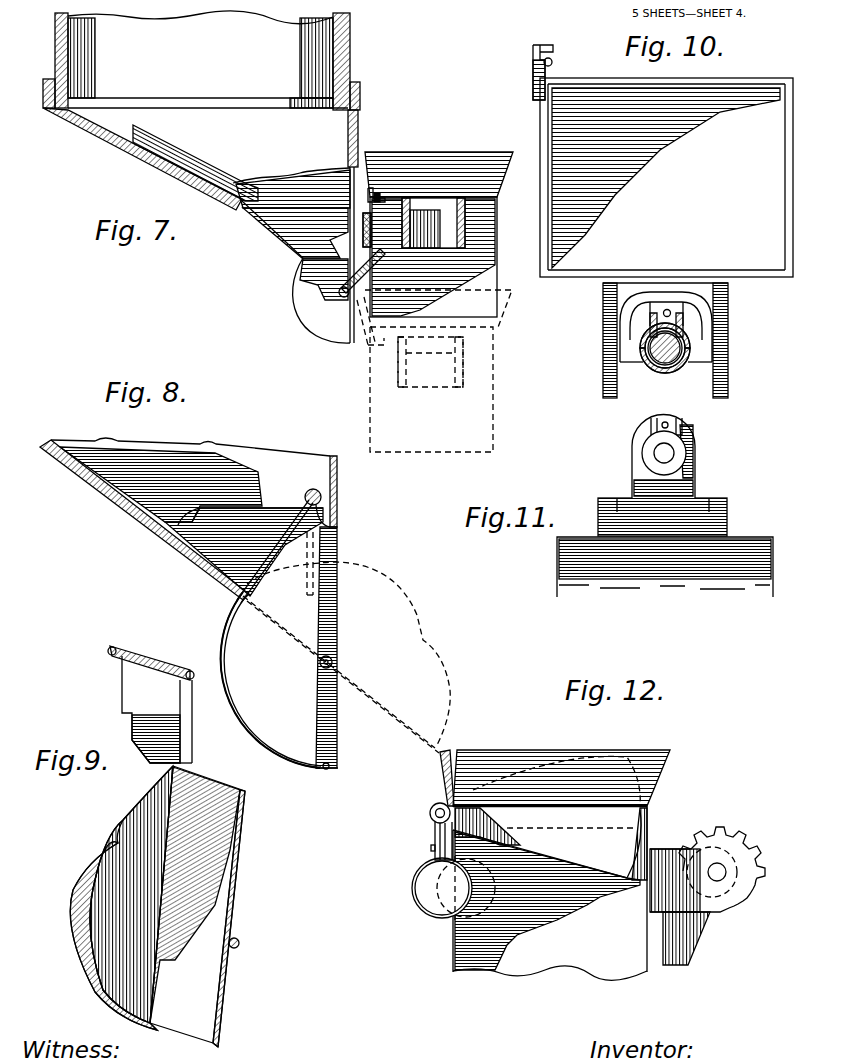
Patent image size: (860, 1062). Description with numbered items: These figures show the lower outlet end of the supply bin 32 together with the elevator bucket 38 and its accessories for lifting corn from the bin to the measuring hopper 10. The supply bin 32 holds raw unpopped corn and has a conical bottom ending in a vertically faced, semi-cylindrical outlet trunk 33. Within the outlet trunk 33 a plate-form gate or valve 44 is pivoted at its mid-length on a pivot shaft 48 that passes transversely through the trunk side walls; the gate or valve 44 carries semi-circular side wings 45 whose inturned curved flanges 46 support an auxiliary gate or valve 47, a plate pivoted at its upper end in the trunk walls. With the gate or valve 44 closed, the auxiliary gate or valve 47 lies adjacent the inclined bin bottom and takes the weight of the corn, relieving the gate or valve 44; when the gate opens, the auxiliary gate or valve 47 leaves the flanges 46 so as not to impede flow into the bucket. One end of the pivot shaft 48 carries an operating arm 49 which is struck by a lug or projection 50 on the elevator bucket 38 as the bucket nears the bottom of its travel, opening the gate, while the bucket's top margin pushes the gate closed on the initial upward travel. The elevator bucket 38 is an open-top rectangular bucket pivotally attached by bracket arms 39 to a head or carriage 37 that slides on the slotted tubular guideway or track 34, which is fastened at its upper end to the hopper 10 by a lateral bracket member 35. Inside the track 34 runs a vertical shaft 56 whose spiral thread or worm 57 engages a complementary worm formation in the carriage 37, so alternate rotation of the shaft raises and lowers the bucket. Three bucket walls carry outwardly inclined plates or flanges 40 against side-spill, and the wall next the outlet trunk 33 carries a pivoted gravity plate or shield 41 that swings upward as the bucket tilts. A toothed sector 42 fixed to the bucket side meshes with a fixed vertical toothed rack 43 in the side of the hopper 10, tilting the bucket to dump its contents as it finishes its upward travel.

In FIG. 11, the casing or hopper 10 is at (665, 572).
In FIG. 7, the supply bin 32 is at (201, 177).
In FIG. 11, the supply bin 32 is at (691, 450).
In FIG. 7, the outlet trunk 33 is at (296, 292).
In FIG. 8, the outlet trunk 33 is at (284, 754).
In FIG. 10, the guideway or track 34 is at (650, 367).
In FIG. 11, the lateral bracket member 35 is at (691, 473).
In FIG. 12, the head or carriage 37 is at (693, 936).
In FIG. 7, the elevator bucket 38 is at (490, 270).
In FIG. 10, the elevator bucket 38 is at (663, 161).
In FIG. 8, the elevator bucket 38 is at (185, 519).
In FIG. 12, the elevator bucket 38 is at (529, 891).
In FIG. 10, the bracket arms 39 is at (706, 319).
In FIG. 7, the inclined plates or flanges 40 is at (448, 163).
In FIG. 12, the inclined plates or flanges 40 is at (569, 757).
In FIG. 7, the gravity plate or shield 41 is at (367, 196).
In FIG. 12, the gravity plate or shield 41 is at (547, 843).
In FIG. 7, the toothed sector 42 is at (458, 228).
In FIG. 10, the toothed sector 42 is at (604, 360).
In FIG. 12, the toothed sector 42 is at (747, 830).
In FIG. 11, the toothed rack 43 is at (600, 498).
In FIG. 8, the gate or valve 44 is at (318, 700).
In FIG. 8, the side wings 45 is at (238, 636).
In FIG. 8, the inturned curved flanges 46 is at (228, 664).
In FIG. 8, the auxiliary gate or valve 47 is at (305, 503).
In FIG. 7, the pivot shaft 48 is at (341, 296).
In FIG. 8, the pivot shaft 48 is at (334, 662).
In FIG. 7, the operating arm 49 is at (362, 266).
In FIG. 7, the lug or projection 50 is at (379, 197).
In FIG. 10, the vertical shaft 56 is at (666, 352).
In FIG. 11, the vertical shaft 56 is at (661, 453).
In FIG. 10, the spiral thread or worm 57 is at (686, 365).